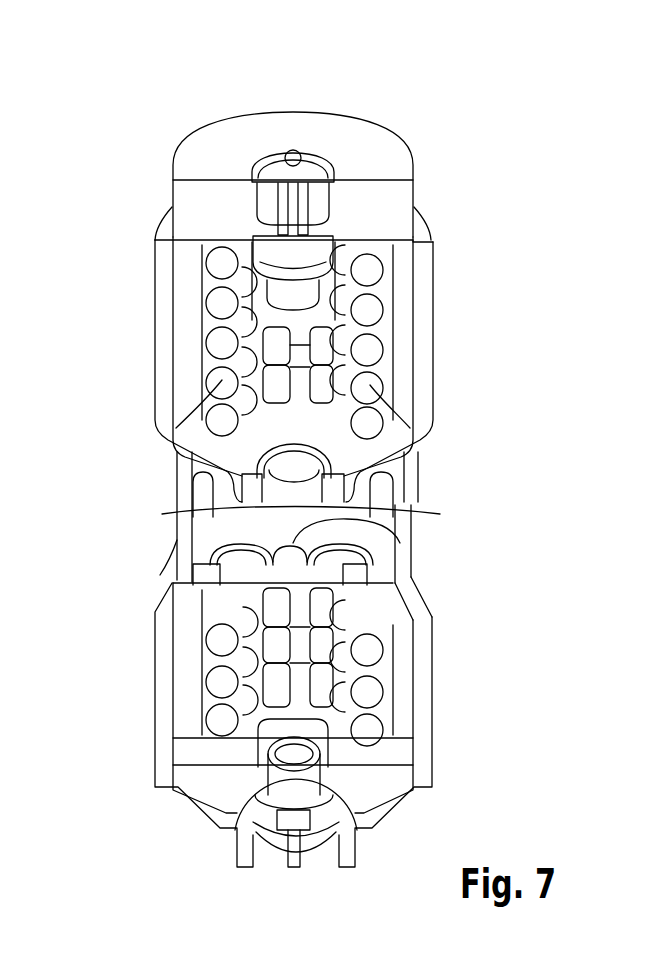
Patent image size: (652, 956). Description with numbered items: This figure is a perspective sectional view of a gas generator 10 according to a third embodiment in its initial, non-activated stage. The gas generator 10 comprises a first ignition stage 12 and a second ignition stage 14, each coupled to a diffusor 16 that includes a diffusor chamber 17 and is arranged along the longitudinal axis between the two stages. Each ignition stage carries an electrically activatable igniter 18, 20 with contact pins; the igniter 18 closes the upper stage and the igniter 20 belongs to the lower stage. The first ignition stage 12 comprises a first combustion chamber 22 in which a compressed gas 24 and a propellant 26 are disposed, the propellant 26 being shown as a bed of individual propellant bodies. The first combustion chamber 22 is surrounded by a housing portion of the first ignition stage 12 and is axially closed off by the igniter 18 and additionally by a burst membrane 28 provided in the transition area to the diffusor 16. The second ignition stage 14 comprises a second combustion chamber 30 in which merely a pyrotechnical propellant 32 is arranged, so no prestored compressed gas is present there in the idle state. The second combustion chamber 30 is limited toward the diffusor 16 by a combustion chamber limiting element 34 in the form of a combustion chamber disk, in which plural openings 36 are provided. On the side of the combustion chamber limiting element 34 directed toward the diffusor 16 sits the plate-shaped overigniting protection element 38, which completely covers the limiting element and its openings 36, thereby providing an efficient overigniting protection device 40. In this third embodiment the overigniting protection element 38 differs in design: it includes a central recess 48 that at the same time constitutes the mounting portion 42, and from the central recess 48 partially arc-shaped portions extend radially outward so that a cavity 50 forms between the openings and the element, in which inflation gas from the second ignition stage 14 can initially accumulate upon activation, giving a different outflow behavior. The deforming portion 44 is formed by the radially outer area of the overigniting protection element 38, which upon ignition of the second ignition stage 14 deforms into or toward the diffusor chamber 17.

The gas generator 10 is at (146, 113).
The first ignition stage 12 is at (465, 298).
The second ignition stage 14 is at (465, 680).
The diffusor 16 is at (480, 558).
The diffusor chamber 17 is at (226, 497).
The igniter 18 is at (316, 242).
The igniter 20 is at (291, 782).
The first combustion chamber 22 is at (402, 354).
The compressed gas 24 is at (402, 316).
The propellant 26 is at (367, 272).
The burst membrane 28 is at (297, 463).
The second combustion chamber 30 is at (402, 697).
The pyrotechnical propellant 32 is at (367, 650).
The combustion chamber limiting element 34 is at (376, 572).
The openings 36 is at (228, 577).
The overigniting protection element 38 is at (256, 528).
The overigniting protection device 40 is at (106, 487).
The mounting portion 42 is at (296, 557).
The deforming portion 44 is at (398, 542).
The central recess 48 is at (295, 540).
The cavity 50 is at (333, 570).